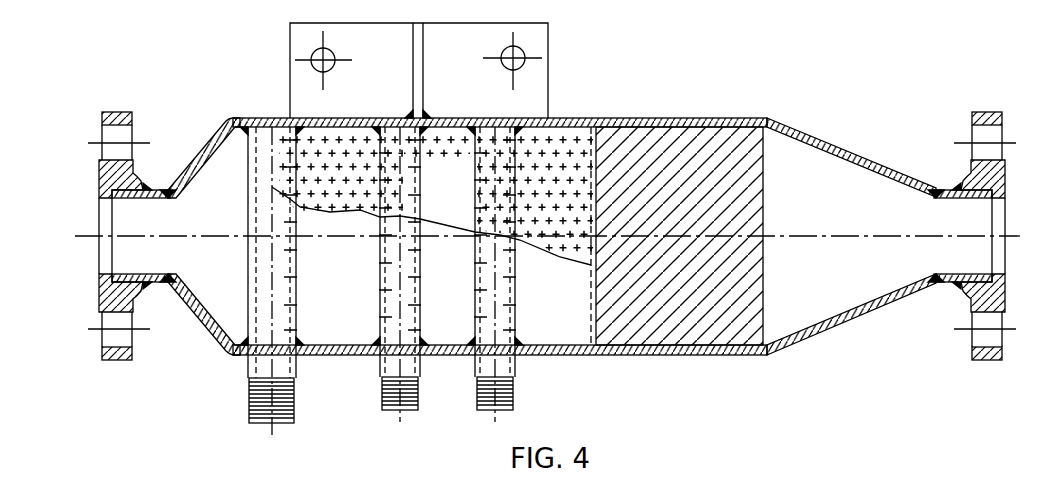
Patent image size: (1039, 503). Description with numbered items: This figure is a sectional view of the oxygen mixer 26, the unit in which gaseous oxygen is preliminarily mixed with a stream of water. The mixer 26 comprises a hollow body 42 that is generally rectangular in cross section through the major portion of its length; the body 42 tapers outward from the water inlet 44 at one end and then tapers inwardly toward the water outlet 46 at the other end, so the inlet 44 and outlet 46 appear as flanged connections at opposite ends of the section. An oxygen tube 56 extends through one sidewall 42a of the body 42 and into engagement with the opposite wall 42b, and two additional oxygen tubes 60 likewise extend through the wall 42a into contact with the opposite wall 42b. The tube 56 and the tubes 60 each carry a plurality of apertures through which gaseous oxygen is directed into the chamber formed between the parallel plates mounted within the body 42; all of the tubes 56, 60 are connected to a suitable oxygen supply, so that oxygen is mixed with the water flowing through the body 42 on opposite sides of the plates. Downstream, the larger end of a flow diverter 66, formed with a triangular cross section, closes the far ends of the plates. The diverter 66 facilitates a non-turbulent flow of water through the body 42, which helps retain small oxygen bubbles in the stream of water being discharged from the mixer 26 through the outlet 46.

The oxygen mixer 26 is at (547, 239).
The hollow body 42 is at (552, 236).
The sidewall 42a is at (558, 356).
The opposite wall 42b is at (568, 117).
The water inlet 44 is at (153, 284).
The water outlet 46 is at (950, 278).
The oxygen tube 56 is at (250, 403).
The additional oxygen tubes 60 is at (385, 406).
The flow diverter 66 is at (742, 260).